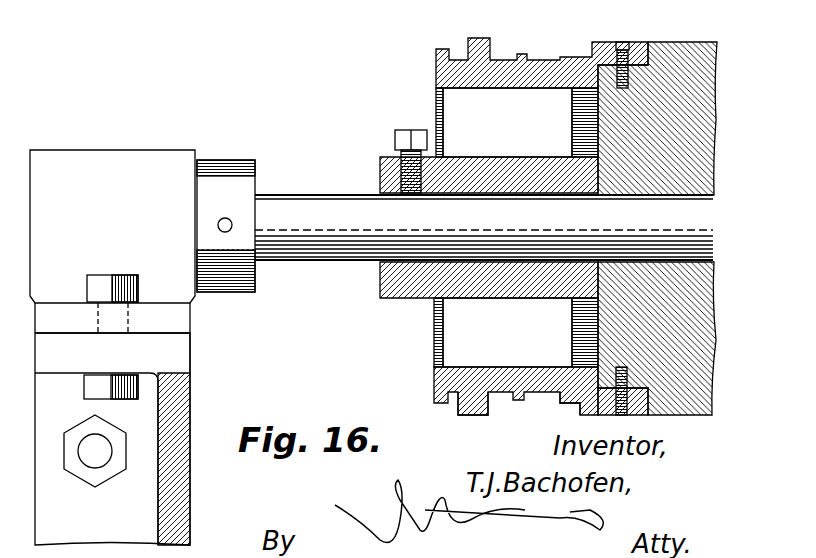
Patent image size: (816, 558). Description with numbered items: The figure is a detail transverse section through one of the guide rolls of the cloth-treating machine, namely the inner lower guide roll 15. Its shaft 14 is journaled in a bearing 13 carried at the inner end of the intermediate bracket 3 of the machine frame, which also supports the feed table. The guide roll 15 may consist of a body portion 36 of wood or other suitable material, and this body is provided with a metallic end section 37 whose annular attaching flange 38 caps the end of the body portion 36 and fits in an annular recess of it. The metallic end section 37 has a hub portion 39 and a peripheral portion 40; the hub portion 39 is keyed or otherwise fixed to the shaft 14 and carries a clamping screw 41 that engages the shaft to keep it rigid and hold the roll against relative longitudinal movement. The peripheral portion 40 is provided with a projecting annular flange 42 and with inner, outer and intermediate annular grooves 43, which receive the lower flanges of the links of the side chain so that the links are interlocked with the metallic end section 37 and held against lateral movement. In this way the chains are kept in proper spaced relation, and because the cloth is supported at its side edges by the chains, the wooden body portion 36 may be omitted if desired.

The intermediate bracket 3 is at (190, 432).
The bearing 13 is at (147, 152).
The shaft 14 is at (330, 260).
The inner lower guide roll 15 is at (698, 43).
The body portion 36 is at (688, 330).
The metallic end section 37 is at (575, 402).
The annular attaching flange 38 is at (622, 416).
The hub portion 39 is at (398, 298).
The peripheral portion 40 is at (434, 378).
The clamping screw 41 is at (395, 137).
The projecting annular flange 42 is at (436, 49).
The annular grooves 43 is at (450, 404).